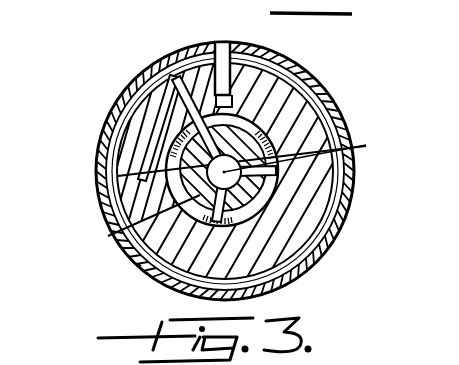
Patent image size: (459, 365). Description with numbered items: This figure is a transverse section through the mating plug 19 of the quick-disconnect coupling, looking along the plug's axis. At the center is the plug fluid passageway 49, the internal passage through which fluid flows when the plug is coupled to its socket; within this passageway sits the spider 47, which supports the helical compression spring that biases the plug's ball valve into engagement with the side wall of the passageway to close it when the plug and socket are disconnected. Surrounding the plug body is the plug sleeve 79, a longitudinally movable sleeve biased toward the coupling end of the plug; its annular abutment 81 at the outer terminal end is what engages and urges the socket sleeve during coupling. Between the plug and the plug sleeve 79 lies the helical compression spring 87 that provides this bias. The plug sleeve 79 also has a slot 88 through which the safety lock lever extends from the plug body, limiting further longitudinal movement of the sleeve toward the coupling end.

The plug 19 is at (128, 128).
The spider 47 is at (109, 234).
The plug fluid passageway 49 is at (218, 116).
The plug sleeve 79 is at (128, 95).
The annular abutment 81 is at (140, 265).
The helical compression spring 87 is at (214, 40).
The slot 88 is at (279, 62).